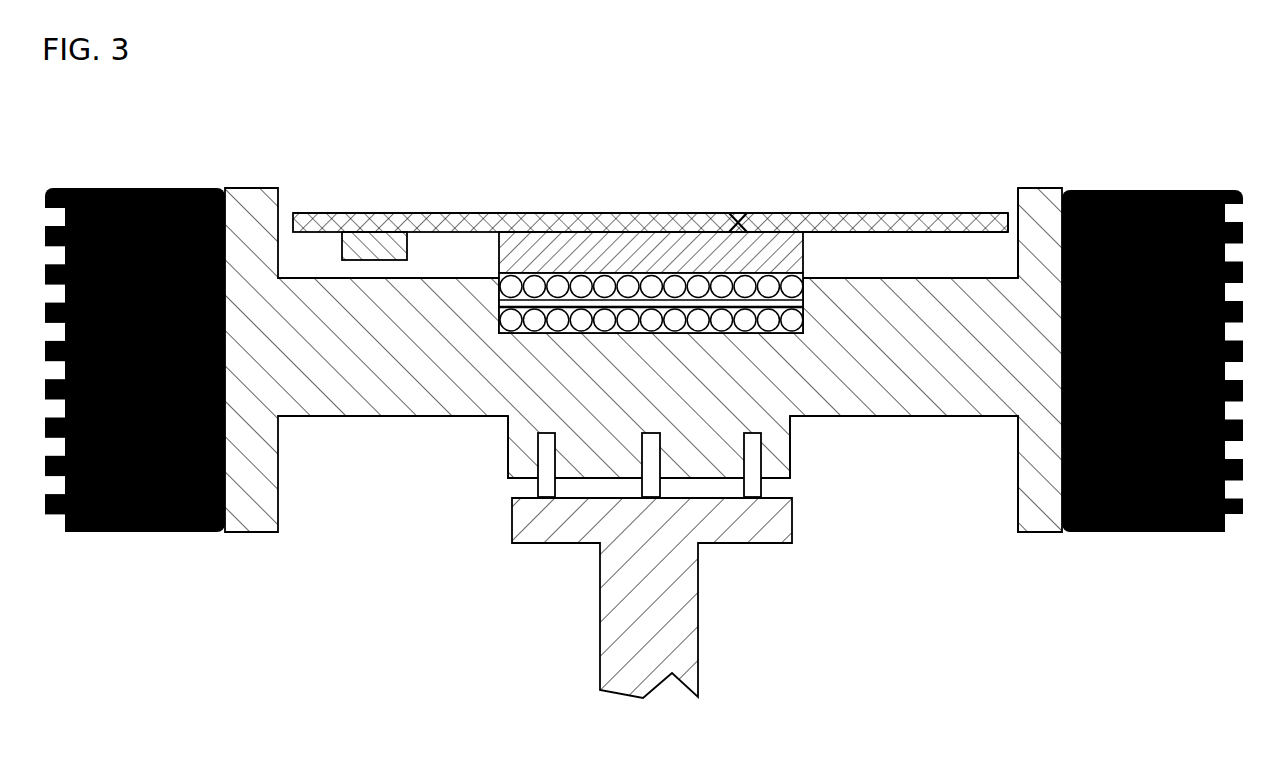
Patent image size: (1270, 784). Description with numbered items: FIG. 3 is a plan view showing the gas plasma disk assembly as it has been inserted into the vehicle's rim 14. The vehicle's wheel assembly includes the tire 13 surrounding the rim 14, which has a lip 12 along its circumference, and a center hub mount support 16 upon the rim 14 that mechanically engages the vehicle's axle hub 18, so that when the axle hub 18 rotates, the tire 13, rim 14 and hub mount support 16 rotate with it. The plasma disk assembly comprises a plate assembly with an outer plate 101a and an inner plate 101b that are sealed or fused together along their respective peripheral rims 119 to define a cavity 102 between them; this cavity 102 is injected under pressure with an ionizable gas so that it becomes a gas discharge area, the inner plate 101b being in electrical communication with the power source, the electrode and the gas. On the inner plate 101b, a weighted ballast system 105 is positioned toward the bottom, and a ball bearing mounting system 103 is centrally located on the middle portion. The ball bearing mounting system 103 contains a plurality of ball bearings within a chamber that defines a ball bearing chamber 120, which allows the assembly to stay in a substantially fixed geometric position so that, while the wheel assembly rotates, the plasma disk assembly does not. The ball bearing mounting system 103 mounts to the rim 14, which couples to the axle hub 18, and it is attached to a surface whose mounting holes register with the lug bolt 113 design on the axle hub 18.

The lip 12 is at (1043, 228).
The tire 13 is at (1148, 182).
The rim 14 is at (355, 328).
The center hub mount support 16 is at (622, 446).
The axle hub 18 is at (532, 534).
The outer plate 101a is at (602, 196).
The inner plate 101b is at (852, 240).
The cavity 102 is at (859, 219).
The ball bearing mounting system 103 is at (652, 287).
The weighted ballast system 105 is at (360, 238).
The lug bolt 113 is at (764, 476).
The peripheral rims 119 is at (995, 241).
The ball bearing chamber 120 is at (487, 273).